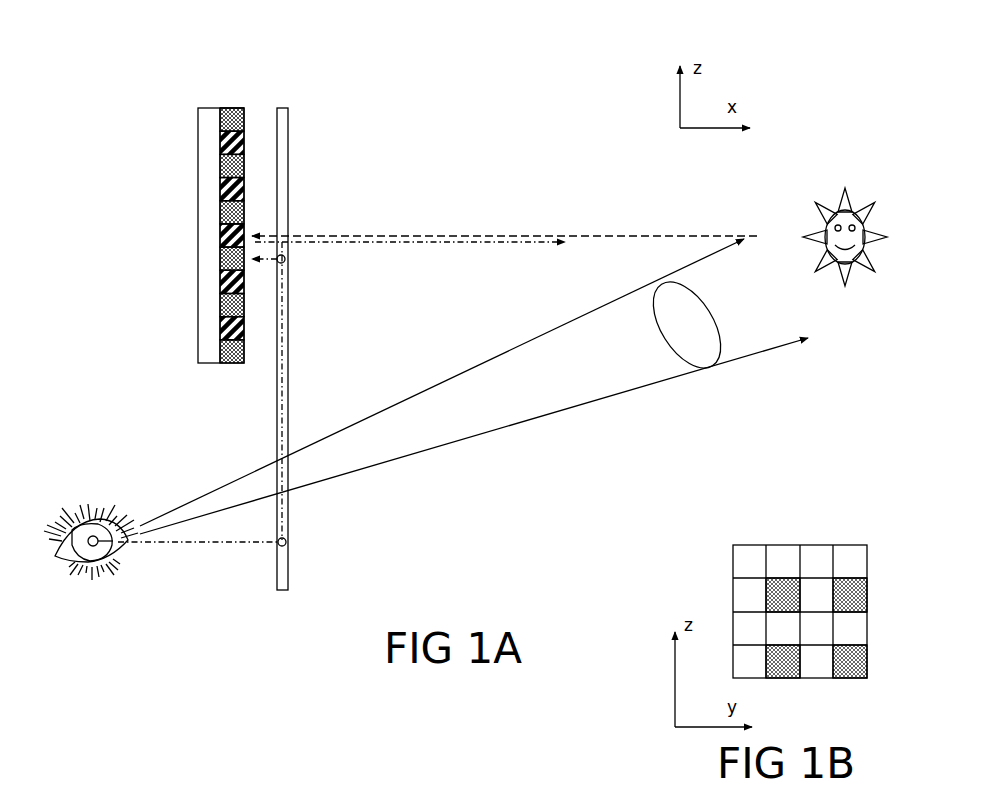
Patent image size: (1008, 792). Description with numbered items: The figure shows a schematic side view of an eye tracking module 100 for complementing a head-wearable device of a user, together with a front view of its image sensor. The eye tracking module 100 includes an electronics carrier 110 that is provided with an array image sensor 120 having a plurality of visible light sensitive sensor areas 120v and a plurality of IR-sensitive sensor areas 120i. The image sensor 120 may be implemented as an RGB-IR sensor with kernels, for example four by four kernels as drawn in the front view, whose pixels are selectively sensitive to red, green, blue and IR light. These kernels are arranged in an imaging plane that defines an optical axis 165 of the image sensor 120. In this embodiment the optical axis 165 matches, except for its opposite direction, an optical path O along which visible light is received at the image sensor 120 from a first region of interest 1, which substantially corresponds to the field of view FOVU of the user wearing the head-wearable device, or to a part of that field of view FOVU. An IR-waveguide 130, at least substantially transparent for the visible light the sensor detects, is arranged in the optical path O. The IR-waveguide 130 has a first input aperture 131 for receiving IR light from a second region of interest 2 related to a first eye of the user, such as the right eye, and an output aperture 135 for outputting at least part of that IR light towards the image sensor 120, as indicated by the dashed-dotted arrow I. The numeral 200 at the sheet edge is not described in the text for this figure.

In FIG. 1A, the first region of interest 1 is at (851, 168).
In FIG. 1A, the second region of interest 2 is at (108, 500).
In FIG. 1A, the eye tracking module 100 is at (243, 84).
In FIG. 1A, the electronics carrier 110 is at (209, 156).
In FIG. 1A, the array image sensor 120 is at (235, 374).
In FIG. 1B, the array image sensor 120 is at (816, 521).
In FIG. 1A, the visible light sensitive sensor areas 120v is at (230, 238).
In FIG. 1A, the IR-sensitive sensor areas 120i is at (235, 305).
In FIG. 1A, the IR-waveguide 130 is at (290, 155).
In FIG. 1A, the first input aperture 131 is at (297, 546).
In FIG. 1A, the output aperture 135 is at (296, 265).
In FIG. 1A, the optical axis 165 is at (478, 247).
In FIG. 1A, the system of following figure 200 is at (238, 791).
In FIG. 1A, the optical path O is at (474, 222).
In FIG. 1A, the dashed-dotted arrow I is at (226, 556).
In FIG. 1A, the field of view of the user FOVU is at (698, 388).